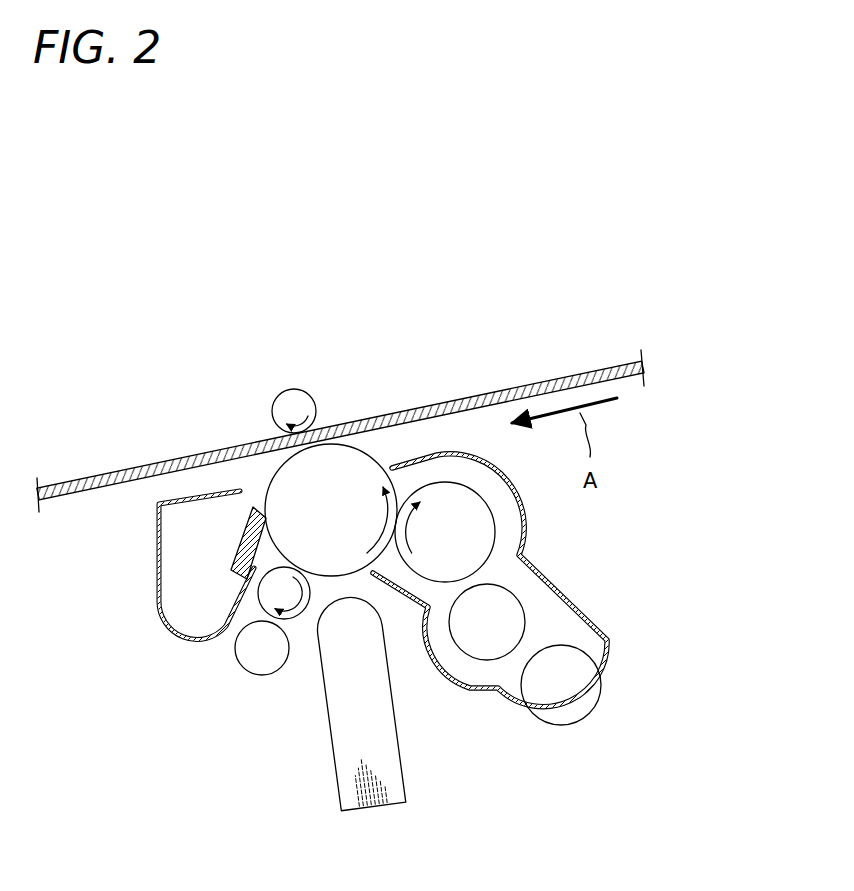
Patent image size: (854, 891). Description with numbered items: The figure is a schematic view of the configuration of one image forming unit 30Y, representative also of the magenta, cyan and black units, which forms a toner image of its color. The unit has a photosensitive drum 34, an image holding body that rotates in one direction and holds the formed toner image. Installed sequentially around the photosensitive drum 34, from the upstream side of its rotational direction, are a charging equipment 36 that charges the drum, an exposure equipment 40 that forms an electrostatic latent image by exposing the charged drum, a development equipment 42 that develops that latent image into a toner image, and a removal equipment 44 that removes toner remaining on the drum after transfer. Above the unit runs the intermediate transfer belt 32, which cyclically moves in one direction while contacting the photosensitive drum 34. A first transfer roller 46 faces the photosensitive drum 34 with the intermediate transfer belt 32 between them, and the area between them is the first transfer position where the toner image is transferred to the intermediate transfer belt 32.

The intermediate transfer belt 32 is at (514, 389).
The photosensitive drum 34 is at (373, 458).
The charging equipment 36 is at (301, 622).
The exposure equipment 40 is at (407, 768).
The development equipment 42 is at (597, 625).
The removal equipment 44 is at (156, 558).
The first transfer roller 46 is at (290, 389).
The image forming unit 30Y is at (582, 546).